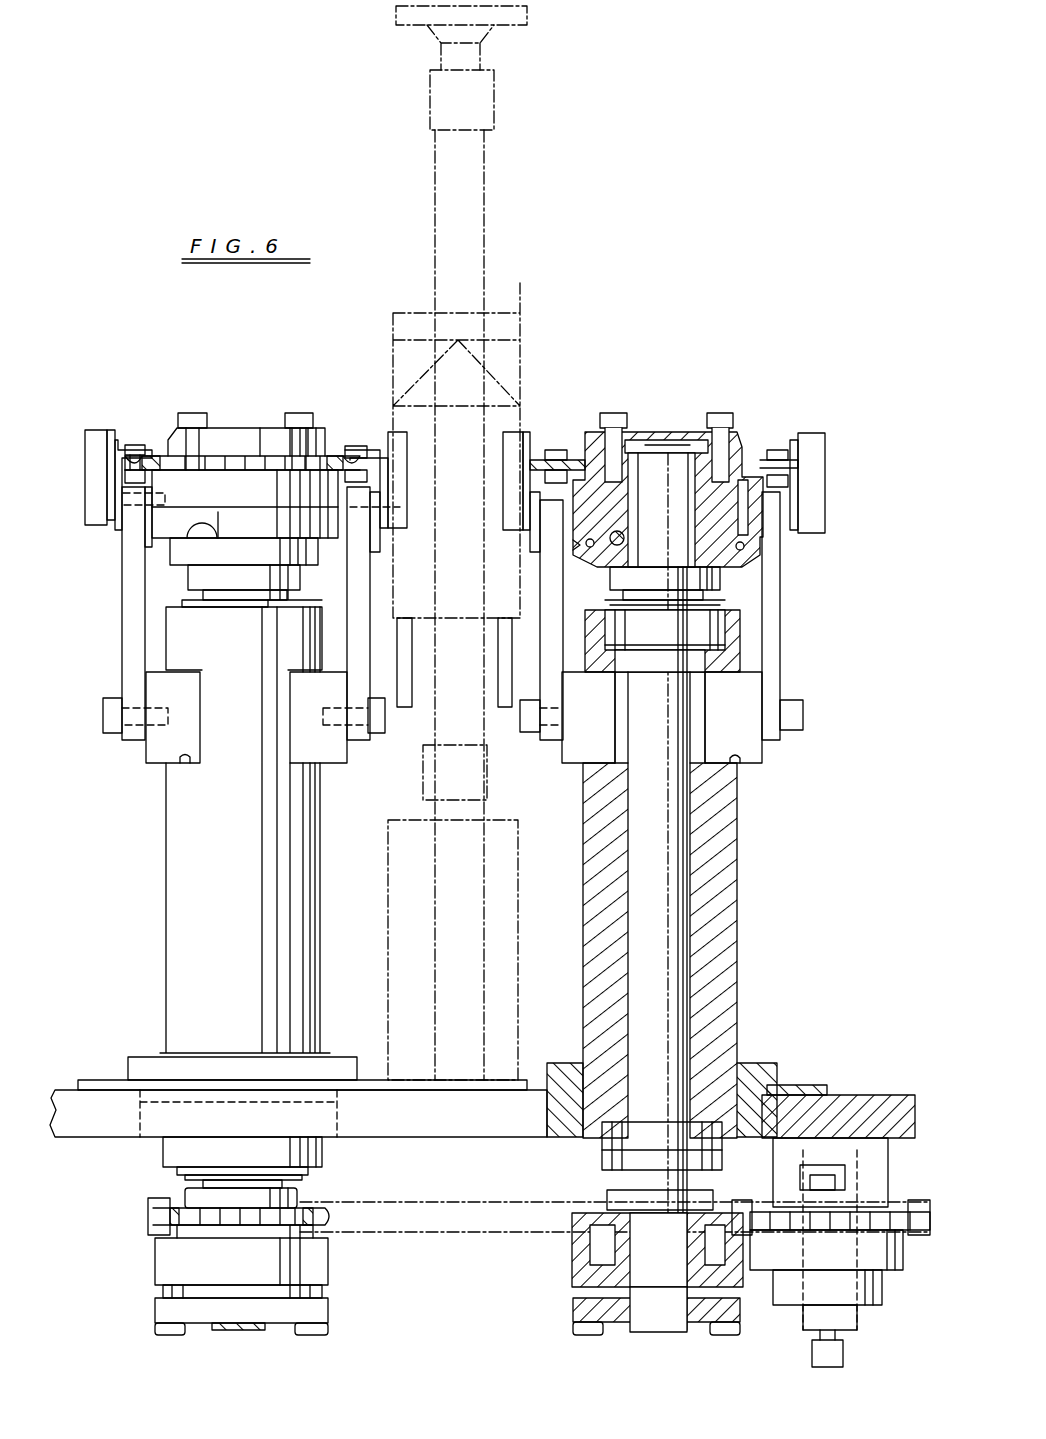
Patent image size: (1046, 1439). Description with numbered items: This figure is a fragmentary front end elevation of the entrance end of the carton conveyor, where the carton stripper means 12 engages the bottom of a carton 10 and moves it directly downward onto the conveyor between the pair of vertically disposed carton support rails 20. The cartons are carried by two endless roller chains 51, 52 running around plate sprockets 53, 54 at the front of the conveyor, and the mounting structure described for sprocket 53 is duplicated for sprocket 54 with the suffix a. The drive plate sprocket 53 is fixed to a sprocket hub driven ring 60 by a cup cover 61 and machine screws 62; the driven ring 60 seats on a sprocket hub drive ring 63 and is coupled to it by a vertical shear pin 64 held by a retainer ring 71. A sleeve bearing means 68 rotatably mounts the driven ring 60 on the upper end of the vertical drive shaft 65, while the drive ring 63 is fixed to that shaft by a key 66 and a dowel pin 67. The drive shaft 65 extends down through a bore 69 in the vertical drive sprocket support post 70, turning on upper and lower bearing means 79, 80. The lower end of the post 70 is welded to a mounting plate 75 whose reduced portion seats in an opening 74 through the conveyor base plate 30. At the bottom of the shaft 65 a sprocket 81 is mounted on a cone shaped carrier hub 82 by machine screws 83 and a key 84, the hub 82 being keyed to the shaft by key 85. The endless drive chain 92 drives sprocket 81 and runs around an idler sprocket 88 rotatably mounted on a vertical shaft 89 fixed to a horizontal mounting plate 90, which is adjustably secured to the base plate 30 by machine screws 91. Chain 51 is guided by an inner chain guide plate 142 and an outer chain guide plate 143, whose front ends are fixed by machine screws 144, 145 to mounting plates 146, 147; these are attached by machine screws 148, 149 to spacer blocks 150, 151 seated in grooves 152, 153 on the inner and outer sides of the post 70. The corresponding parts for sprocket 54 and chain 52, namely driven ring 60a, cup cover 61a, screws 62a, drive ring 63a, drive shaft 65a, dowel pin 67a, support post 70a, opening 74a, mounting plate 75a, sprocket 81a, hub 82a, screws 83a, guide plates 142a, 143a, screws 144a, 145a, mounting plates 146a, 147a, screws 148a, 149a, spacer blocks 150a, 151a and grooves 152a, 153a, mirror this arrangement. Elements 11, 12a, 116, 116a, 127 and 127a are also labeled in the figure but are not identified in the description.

The carton 10 is at (527, 15).
The carton stripper means 12 is at (498, 116).
The spindle carrier position 12a is at (425, 797).
The carton support rails 20 is at (498, 683).
The frame 11 is at (762, 440).
The conveyor base plate 30 is at (860, 1115).
The endless roller chain 51 is at (826, 432).
The endless roller chain 52 is at (140, 444).
The drive plate sprocket 53 is at (558, 450).
The drive plate sprocket 54 is at (336, 454).
The sprocket hub driven ring 60 is at (590, 545).
The sprocket hub driven ring 60a is at (245, 504).
The cup cover 61 is at (738, 428).
The cup cover 61a is at (330, 428).
The machine screws 62 is at (588, 418).
The machine screws 62a is at (192, 413).
The sprocket hub drive ring 63 is at (725, 560).
The sprocket hub drive ring 63a is at (172, 545).
The shear pin 64 is at (760, 546).
The vertical drive shaft 65 is at (655, 550).
The vertical drive shaft 65a is at (298, 1184).
The key 66 is at (715, 550).
The dowel pin 67 is at (625, 536).
The dowel pin 67a is at (212, 533).
The sleeve bearing means 68 is at (792, 462).
The bore 69 is at (690, 920).
The vertical drive sprocket support post 70 is at (728, 852).
The vertical drive sprocket support post 70a is at (172, 908).
The retainer ring 71 is at (752, 553).
The opening 74 is at (778, 1085).
The opening 74a is at (340, 1120).
The mounting plate 75 is at (748, 1075).
The mounting plate 75a is at (350, 1057).
The upper bearing means 79 is at (662, 636).
The lower bearing means 80 is at (620, 1155).
The drive sprocket 81 is at (607, 1205).
The drive sprocket 81a is at (330, 1224).
The cone shaped carrier hub 82 is at (580, 1312).
The cone shaped carrier hub 82a is at (328, 1312).
The machine screws 83 is at (715, 1337).
The machine screws 83a is at (295, 1332).
The key 84 is at (712, 1257).
The key 85 is at (628, 1247).
The idler sprocket 88 is at (843, 1230).
The vertical shaft 89 is at (858, 1300).
The horizontal mounting plate 90 is at (880, 1160).
The machine screws 91 is at (846, 1187).
The endless drive chain 92 is at (448, 1205).
The bracket 116 is at (548, 448).
The bracket 116a is at (124, 446).
The plate 127 is at (500, 460).
The plate 127a is at (82, 430).
The inner chain guide plate 142 is at (535, 550).
The inner chain guide plate 142a is at (370, 540).
The outer chain guide plate 143 is at (792, 550).
The outer chain guide plate 143a is at (118, 535).
The machine screws 144 is at (512, 518).
The machine screws 144a is at (400, 503).
The machine screws 145 is at (833, 512).
The machine screws 145a is at (150, 502).
The mounting plate 146 is at (548, 742).
The mounting plate 146a is at (355, 645).
The mounting plate 147 is at (782, 662).
The mounting plate 147a is at (124, 655).
The machine screws 148 is at (520, 720).
The machine screws 148a is at (345, 740).
The machine screws 149 is at (805, 716).
The machine screws 149a is at (112, 733).
The spacer block 150 is at (588, 717).
The spacer block 150a is at (338, 755).
The spacer block 151 is at (752, 748).
The spacer block 151a is at (150, 760).
The groove 152 is at (585, 765).
The groove 152a is at (285, 760).
The groove 153 is at (738, 763).
The groove 153a is at (185, 766).